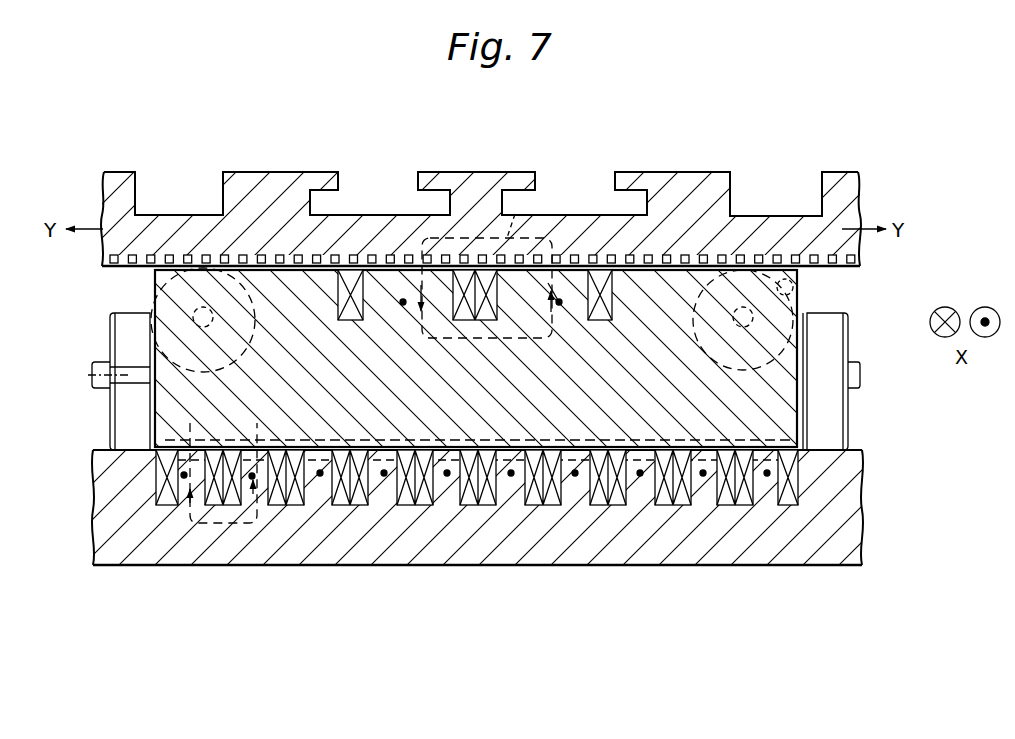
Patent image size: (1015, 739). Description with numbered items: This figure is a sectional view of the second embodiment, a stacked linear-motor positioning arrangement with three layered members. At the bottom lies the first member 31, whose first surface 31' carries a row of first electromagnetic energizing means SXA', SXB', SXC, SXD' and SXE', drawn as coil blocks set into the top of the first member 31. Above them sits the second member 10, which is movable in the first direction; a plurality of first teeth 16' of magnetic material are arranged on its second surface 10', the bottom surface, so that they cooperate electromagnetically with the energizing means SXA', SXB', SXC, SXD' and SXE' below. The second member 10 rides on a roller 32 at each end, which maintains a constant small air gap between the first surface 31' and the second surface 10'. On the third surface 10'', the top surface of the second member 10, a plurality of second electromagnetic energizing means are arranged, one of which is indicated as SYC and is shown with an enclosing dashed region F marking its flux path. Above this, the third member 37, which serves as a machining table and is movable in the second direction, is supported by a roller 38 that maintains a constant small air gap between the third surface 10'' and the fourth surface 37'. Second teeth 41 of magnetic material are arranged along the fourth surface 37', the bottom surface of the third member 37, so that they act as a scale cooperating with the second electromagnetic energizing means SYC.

The third member 37 is at (481, 198).
The fourth surface 37' is at (90, 292).
The second teeth 41 is at (343, 254).
The second member 10 is at (427, 360).
The second surface 10' is at (478, 532).
The third surface 10'' is at (393, 238).
The first teeth 16' is at (503, 415).
The roller 38 is at (155, 292).
The roller 32 is at (120, 427).
The first member 31 is at (477, 532).
The first surface 31' is at (834, 422).
The second electromagnetic energizing means SYC is at (548, 284).
The first electromagnetic energizing means SXA' is at (218, 547).
The first electromagnetic energizing means SXB' is at (352, 546).
The first electromagnetic energizing means SXC is at (511, 476).
The first electromagnetic energizing means SXD' is at (616, 546).
The first electromagnetic energizing means SXE' is at (738, 543).
The magnetic flux region F is at (270, 578).